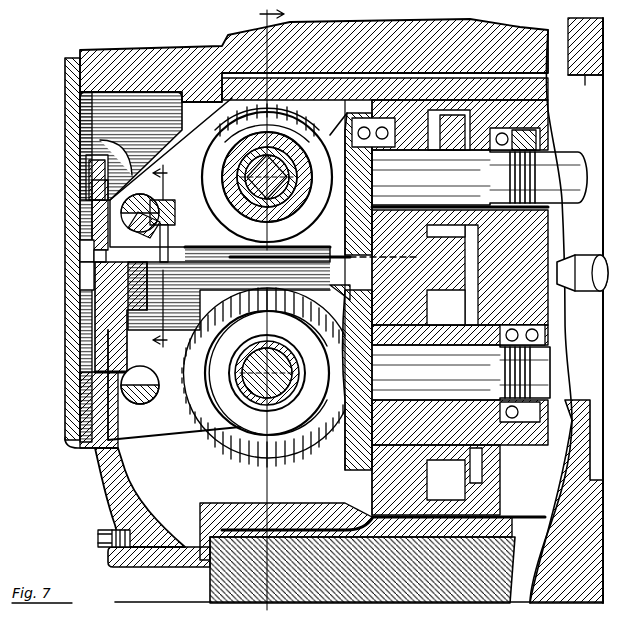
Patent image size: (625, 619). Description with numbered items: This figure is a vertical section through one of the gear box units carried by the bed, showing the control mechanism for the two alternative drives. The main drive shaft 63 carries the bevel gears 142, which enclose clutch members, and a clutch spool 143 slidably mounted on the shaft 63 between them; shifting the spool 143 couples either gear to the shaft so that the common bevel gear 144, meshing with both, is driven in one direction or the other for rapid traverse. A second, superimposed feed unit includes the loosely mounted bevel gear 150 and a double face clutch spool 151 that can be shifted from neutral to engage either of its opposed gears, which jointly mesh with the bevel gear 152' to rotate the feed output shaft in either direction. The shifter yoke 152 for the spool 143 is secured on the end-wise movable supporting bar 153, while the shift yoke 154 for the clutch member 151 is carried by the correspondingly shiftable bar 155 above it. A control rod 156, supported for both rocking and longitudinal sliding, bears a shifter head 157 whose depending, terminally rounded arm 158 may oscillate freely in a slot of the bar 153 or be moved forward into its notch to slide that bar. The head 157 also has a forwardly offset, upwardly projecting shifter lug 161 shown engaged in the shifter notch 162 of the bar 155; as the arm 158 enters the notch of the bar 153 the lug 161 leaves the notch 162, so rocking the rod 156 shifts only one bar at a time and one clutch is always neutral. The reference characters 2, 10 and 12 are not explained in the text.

The housing 2 is at (498, 285).
The pivot axis 10 is at (171, 256).
The axis of rotation 12 is at (262, 15).
The main drive shaft 63 is at (292, 135).
The bevel gears 142 is at (240, 462).
The clutch spool 143 is at (345, 481).
The common bevel gear 144 is at (350, 490).
The bevel gear 150 is at (292, 108).
The double face clutch spool 151 is at (236, 122).
The shifter yoke 152 is at (297, 330).
The bevel gear 152' is at (341, 303).
The supporting bar 153 is at (225, 378).
The shift yoke 154 is at (82, 137).
The shiftable bar 155 is at (158, 206).
The control rod 156 is at (95, 290).
The shifter head 157 is at (97, 314).
The depending arm 158 is at (98, 360).
The shifter lug 161 is at (80, 233).
The shifter notch 162 is at (80, 206).